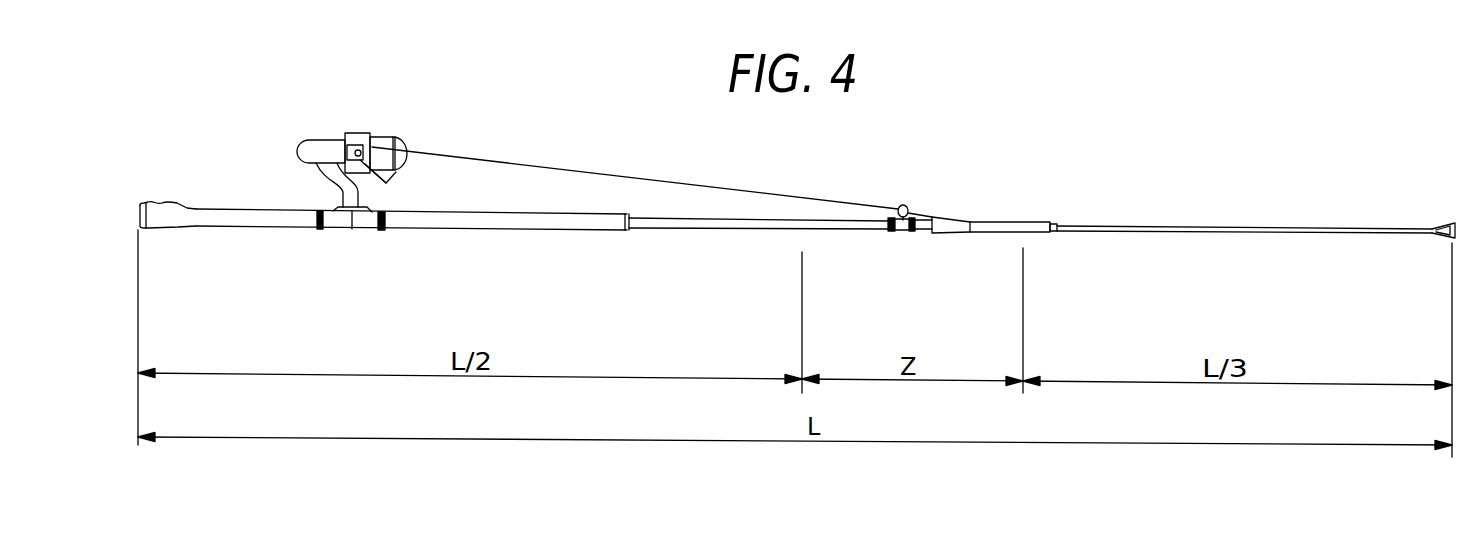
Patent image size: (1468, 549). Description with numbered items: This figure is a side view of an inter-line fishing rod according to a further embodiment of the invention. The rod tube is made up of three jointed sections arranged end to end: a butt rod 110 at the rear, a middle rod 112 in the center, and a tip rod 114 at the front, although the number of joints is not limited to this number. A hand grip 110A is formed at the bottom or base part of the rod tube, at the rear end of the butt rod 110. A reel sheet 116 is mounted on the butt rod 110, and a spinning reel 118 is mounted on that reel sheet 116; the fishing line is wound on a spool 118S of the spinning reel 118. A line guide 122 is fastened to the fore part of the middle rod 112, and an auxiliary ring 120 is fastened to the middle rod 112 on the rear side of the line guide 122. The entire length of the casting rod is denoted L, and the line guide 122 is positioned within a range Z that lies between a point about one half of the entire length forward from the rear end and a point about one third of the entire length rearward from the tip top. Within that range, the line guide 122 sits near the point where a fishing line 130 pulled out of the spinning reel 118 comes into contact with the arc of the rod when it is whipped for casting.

The butt rod 110 is at (490, 224).
The hand grip 110A is at (160, 209).
The middle rod 112 is at (720, 224).
The tip rod 114 is at (1215, 233).
The reel sheet 116 is at (338, 208).
The spinning reel 118 is at (321, 146).
The spool 118S is at (417, 118).
The auxiliary ring 120 is at (903, 205).
The line guide 122 is at (957, 218).
The fishing line 130 is at (483, 162).